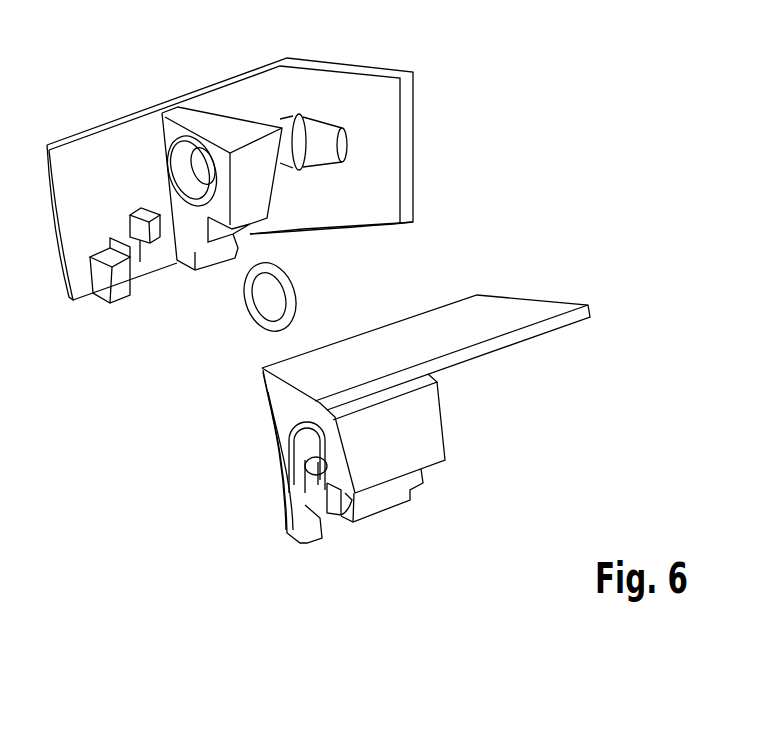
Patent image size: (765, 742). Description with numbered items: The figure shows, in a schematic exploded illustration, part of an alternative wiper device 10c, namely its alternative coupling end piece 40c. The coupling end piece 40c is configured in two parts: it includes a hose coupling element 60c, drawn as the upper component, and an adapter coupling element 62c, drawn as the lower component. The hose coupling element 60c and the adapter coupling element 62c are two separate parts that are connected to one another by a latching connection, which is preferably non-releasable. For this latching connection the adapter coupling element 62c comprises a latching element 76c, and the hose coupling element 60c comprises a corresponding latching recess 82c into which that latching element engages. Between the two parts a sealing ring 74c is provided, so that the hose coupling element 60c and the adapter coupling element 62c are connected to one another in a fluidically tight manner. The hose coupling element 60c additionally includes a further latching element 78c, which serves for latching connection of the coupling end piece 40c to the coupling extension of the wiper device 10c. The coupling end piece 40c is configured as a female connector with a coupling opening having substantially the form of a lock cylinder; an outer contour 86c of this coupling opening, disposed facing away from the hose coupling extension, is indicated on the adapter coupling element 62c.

The wiper device 10c is at (500, 102).
The coupling end piece 40c is at (555, 253).
The hose coupling element 60c is at (302, 87).
The adapter coupling element 62c is at (410, 432).
The sealing ring 74c is at (285, 290).
The latching element 76c is at (103, 283).
The further latching element 78c is at (147, 230).
The latching recess 82c is at (325, 518).
The outer contour 86c is at (278, 465).